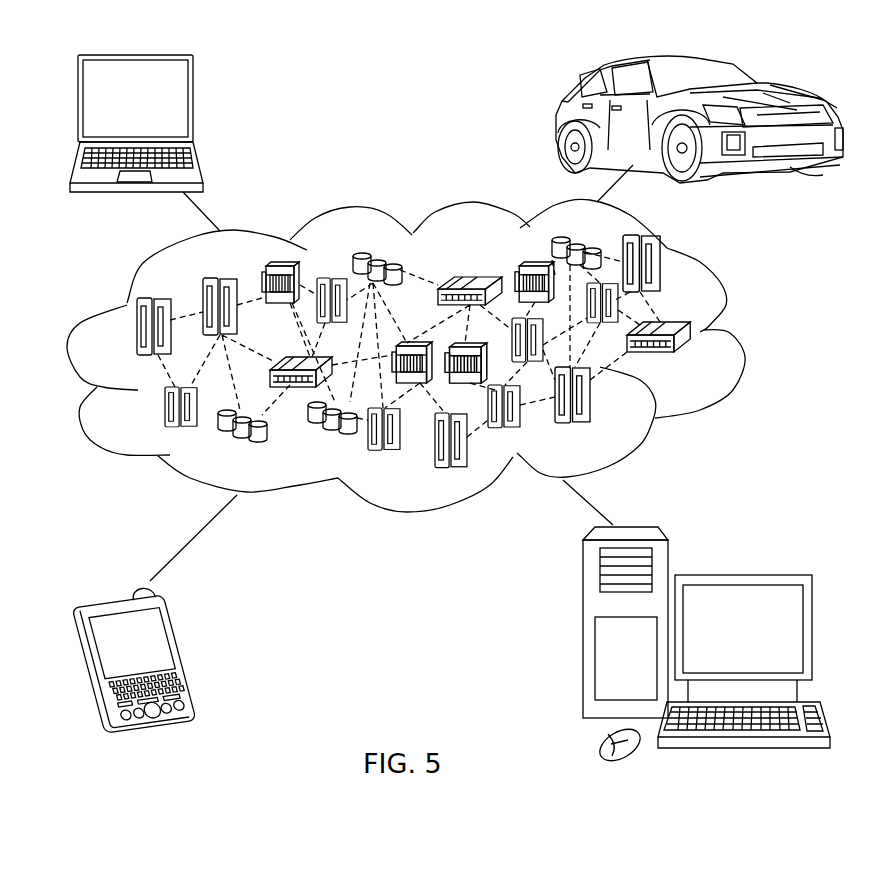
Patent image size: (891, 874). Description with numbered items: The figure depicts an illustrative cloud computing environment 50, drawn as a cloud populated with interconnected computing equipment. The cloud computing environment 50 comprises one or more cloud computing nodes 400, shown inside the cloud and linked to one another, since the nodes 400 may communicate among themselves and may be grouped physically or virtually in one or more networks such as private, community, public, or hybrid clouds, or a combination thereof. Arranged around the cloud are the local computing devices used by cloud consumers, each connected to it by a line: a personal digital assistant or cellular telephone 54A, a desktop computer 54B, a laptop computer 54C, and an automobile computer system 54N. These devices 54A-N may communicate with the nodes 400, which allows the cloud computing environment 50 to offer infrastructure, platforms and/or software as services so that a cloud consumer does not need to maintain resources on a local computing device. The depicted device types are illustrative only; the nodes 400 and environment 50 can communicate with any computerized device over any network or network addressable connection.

The cloud computing environment 50 is at (742, 332).
The cloud computing nodes 400 is at (697, 361).
The personal digital assistant (PDA) or cellular telephone 54A is at (185, 652).
The desktop computer 54B is at (740, 573).
The laptop computer 54C is at (193, 105).
The automobile computer system 54N is at (558, 121).